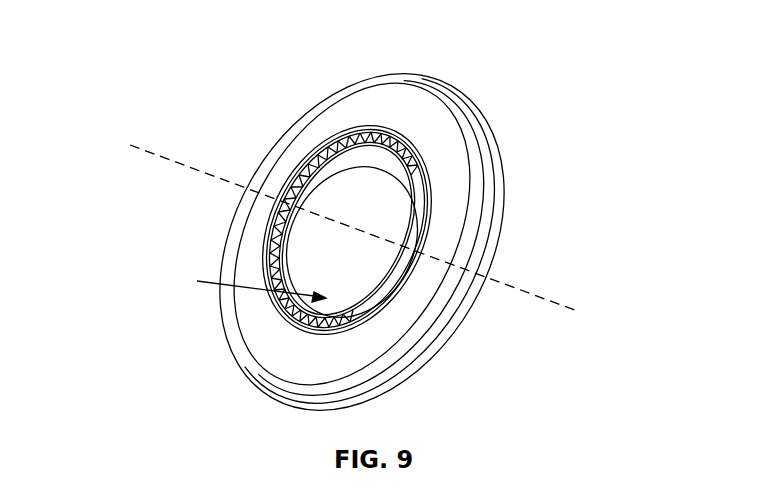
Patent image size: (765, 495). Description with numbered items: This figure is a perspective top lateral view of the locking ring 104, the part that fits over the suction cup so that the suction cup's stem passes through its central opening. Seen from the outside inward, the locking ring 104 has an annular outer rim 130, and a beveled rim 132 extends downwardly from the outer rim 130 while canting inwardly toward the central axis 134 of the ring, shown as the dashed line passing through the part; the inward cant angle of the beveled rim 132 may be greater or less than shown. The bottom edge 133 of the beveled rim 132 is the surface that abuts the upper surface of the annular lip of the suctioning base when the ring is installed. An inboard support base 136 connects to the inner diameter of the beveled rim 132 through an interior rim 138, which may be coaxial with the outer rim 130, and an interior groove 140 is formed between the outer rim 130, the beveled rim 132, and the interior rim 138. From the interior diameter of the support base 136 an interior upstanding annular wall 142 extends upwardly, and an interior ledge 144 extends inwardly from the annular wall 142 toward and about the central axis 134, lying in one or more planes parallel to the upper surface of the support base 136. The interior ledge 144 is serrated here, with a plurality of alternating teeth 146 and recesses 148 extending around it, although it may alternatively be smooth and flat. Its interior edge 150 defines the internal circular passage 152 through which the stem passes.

The locking ring 104 is at (243, 104).
The annular outer rim 130 is at (362, 242).
The beveled rim 132 is at (493, 200).
The bottom edge 133 is at (452, 322).
The central axis 134 is at (183, 165).
The inboard support base 136 is at (427, 138).
The interior rim 138 is at (468, 158).
The interior groove 140 is at (418, 199).
The interior upstanding annular wall 142 is at (415, 145).
The interior ledge 144 is at (328, 165).
The teeth 146 is at (283, 262).
The recesses 148 is at (297, 233).
The interior edge 150 is at (316, 191).
The internal circular passage 152 is at (239, 286).